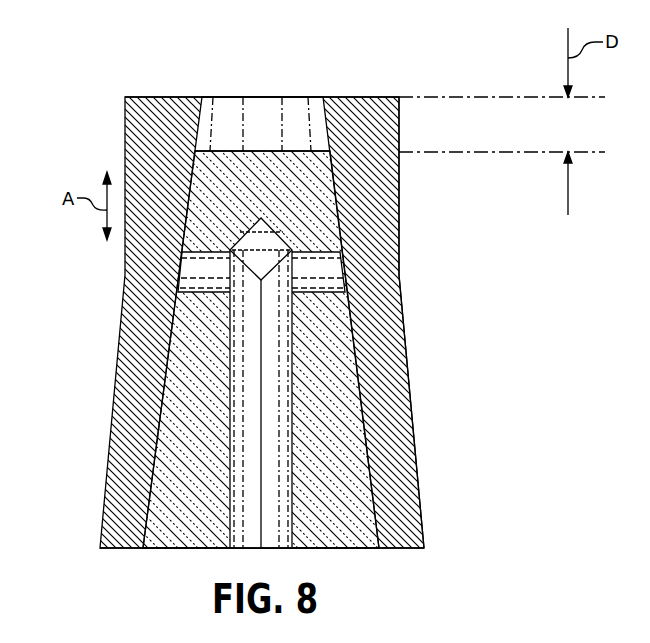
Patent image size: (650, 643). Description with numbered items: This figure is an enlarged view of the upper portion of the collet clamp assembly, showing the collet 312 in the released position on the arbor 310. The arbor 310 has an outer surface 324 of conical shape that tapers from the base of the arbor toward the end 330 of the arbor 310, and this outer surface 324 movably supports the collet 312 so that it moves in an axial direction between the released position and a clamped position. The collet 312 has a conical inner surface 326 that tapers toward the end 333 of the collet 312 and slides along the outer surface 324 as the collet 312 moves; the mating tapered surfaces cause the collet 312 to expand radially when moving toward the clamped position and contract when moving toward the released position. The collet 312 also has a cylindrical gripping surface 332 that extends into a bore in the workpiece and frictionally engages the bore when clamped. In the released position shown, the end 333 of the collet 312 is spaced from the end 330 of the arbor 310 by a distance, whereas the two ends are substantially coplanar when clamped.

The arbor 310 is at (350, 550).
The collet 312 is at (413, 445).
The outer surface 324 is at (365, 412).
The inner surface 326 is at (198, 151).
The end 330 is at (262, 151).
The gripping surface 332 is at (125, 130).
The end 333 is at (152, 97).